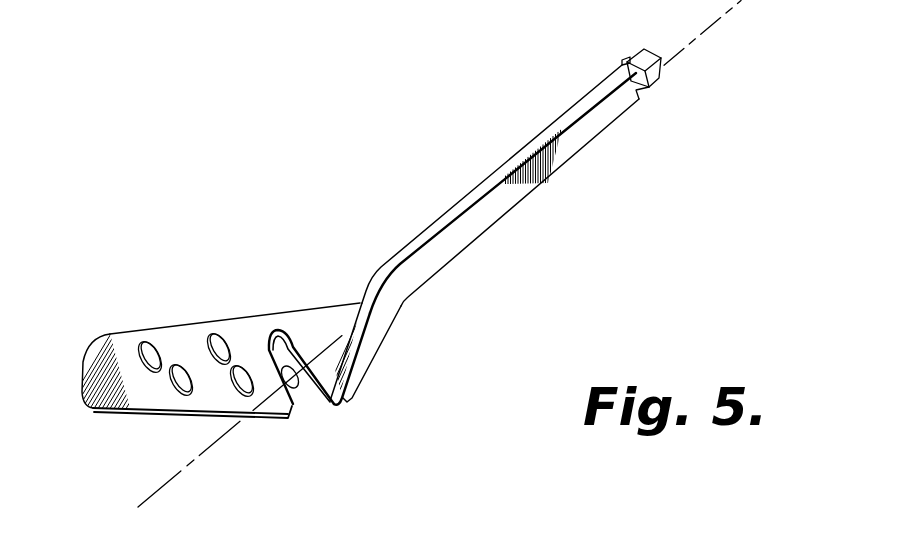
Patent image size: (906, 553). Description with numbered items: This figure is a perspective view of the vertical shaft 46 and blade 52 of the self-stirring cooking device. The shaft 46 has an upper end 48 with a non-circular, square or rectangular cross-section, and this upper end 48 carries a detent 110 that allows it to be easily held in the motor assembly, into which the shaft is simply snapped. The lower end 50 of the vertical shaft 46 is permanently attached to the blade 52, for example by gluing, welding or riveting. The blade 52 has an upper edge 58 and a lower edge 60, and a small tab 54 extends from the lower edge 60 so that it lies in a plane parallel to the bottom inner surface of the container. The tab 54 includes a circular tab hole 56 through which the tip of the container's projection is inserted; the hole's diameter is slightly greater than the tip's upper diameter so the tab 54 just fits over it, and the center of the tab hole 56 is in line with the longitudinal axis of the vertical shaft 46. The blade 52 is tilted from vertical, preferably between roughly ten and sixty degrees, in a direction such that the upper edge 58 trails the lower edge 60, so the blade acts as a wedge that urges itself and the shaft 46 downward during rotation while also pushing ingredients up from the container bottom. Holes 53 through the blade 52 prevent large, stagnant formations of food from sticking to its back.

The vertical shaft 46 is at (487, 173).
The upper end 48 is at (658, 80).
The lower end 50 is at (369, 372).
The blade 52 is at (204, 367).
The holes 53 is at (216, 345).
The tab 54 is at (313, 401).
The tab hole 56 is at (293, 413).
The upper edge 58 is at (238, 318).
The lower edge 60 is at (138, 416).
The detent 110 is at (619, 62).